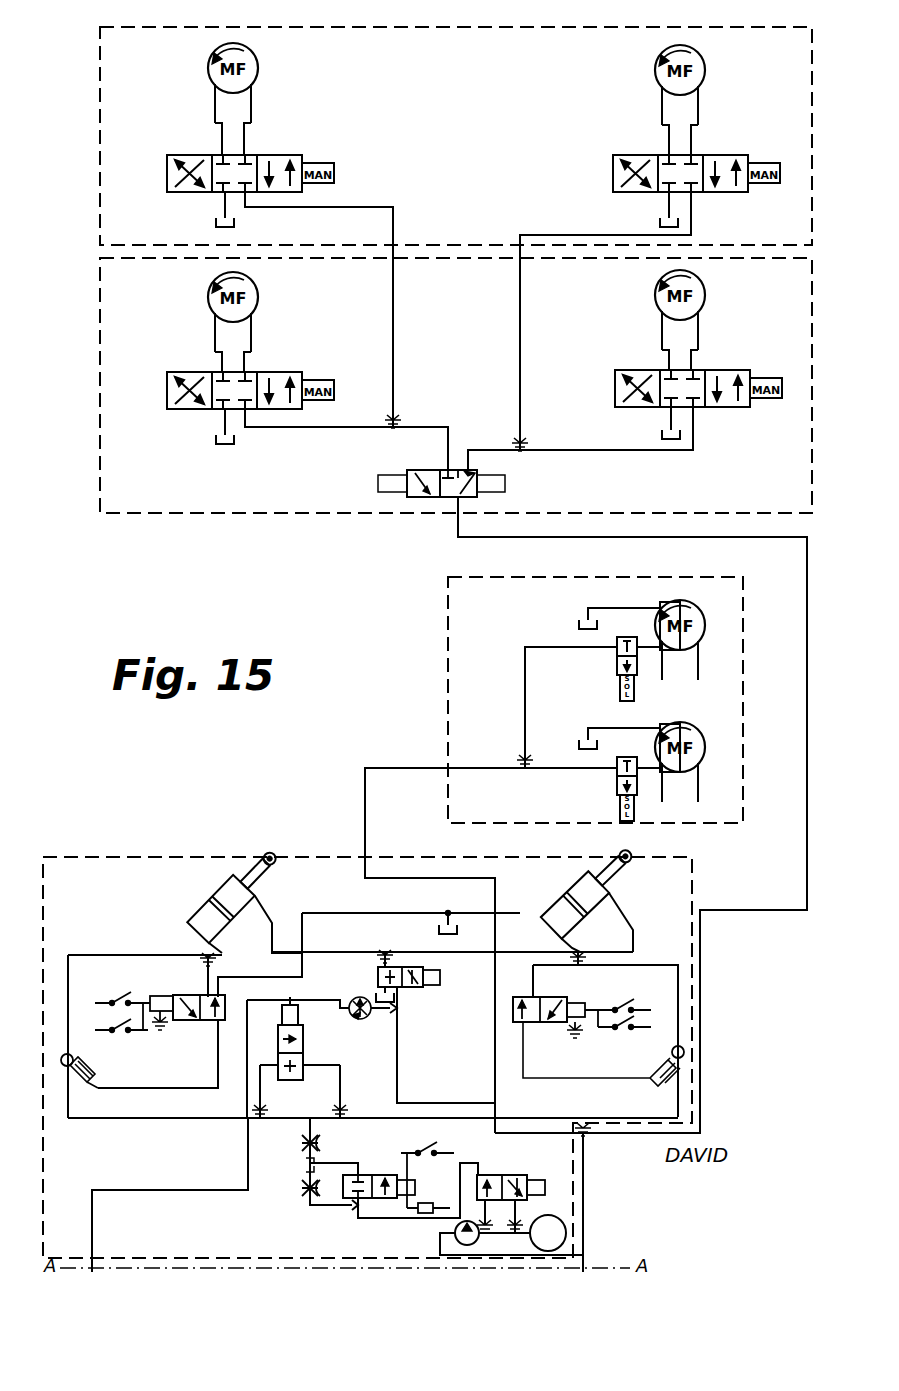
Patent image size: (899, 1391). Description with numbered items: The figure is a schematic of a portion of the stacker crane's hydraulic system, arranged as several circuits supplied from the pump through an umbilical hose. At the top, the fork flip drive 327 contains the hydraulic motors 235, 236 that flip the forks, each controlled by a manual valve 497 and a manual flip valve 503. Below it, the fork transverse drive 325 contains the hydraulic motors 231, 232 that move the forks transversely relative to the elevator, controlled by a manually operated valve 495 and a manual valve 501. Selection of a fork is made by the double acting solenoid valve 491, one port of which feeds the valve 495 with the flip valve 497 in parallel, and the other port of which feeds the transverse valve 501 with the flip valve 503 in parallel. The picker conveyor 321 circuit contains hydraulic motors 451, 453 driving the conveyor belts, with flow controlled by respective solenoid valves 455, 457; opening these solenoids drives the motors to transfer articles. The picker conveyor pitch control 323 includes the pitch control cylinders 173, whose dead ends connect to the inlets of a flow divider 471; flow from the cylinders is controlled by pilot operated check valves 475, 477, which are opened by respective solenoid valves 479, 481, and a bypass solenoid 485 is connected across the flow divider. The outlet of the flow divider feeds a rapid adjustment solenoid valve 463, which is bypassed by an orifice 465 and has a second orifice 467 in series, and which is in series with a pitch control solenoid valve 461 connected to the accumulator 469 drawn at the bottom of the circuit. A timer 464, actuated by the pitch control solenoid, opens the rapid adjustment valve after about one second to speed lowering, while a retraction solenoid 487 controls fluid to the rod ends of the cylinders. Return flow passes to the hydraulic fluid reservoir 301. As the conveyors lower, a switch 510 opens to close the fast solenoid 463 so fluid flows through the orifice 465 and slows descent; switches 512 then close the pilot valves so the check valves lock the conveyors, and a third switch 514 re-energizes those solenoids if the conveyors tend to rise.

The fork flip drive 327 is at (545, 27).
The hydraulic motor 235 is at (255, 60).
The hydraulic motor 236 is at (702, 60).
The manual valve 497 is at (268, 155).
The manual flip valve 503 is at (716, 155).
The fork transverse drive 325 is at (338, 522).
The hydraulic motor 231 is at (255, 290).
The hydraulic motor 232 is at (704, 290).
The manually operated valve 495 is at (268, 372).
The manual valve 501 is at (714, 408).
The double acting solenoid valve 491 is at (468, 498).
The picker conveyor 321 is at (745, 700).
The hydraulic motor 453 is at (705, 628).
The solenoid valve 457 is at (637, 665).
The hydraulic motor 451 is at (688, 723).
The solenoid valve 455 is at (637, 785).
The picker conveyor pitch control 323 is at (695, 887).
The picker conveyor pitch control cylinder 173 is at (218, 882).
The switch 512 is at (118, 995).
The third switch 514 is at (118, 1038).
The solenoid valve 479 is at (190, 1022).
The pilot operated check valve 475 is at (90, 1064).
The pilot operated check valve 477 is at (686, 1055).
The solenoid valve 481 is at (560, 997).
The retraction solenoid 487 is at (440, 975).
The bypass solenoid 485 is at (303, 1030).
The flow divider 471 is at (326, 1112).
The second orifice 467 is at (318, 1142).
The orifice 465 is at (301, 1190).
The rapid adjustment solenoid valve 463 is at (375, 1175).
The switch 510 is at (430, 1142).
The timer 464 is at (428, 1202).
The pitch control solenoid valve 461 is at (526, 1160).
The hydraulic fluid reservoir 301 is at (452, 1228).
The accumulator 469 is at (558, 1218).